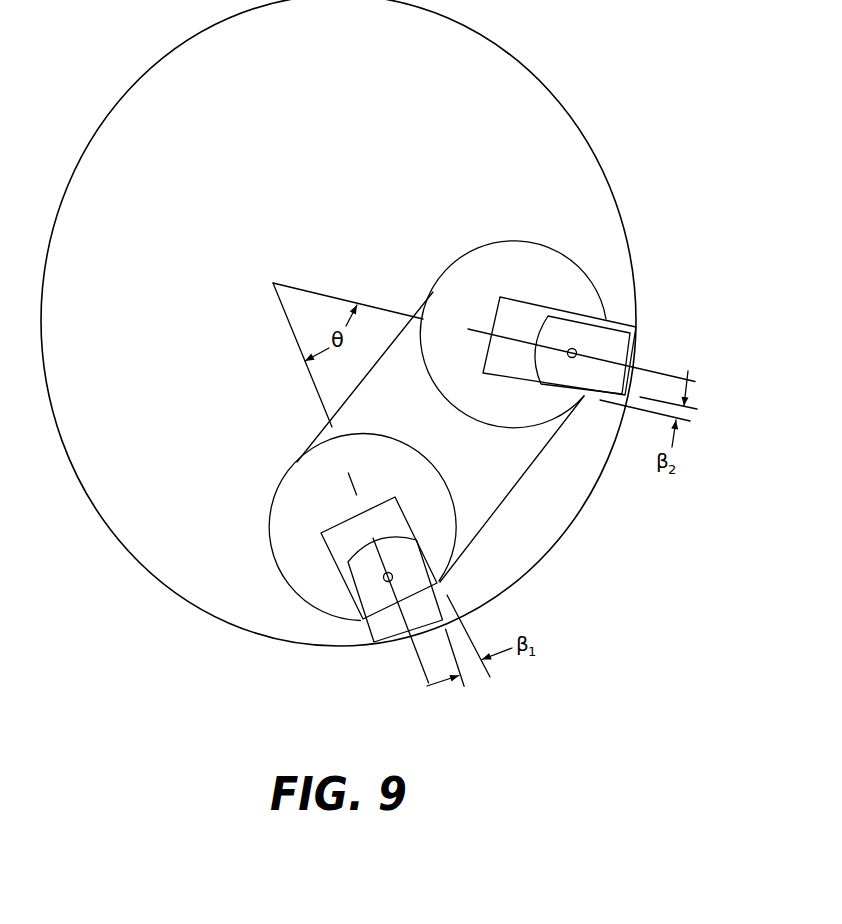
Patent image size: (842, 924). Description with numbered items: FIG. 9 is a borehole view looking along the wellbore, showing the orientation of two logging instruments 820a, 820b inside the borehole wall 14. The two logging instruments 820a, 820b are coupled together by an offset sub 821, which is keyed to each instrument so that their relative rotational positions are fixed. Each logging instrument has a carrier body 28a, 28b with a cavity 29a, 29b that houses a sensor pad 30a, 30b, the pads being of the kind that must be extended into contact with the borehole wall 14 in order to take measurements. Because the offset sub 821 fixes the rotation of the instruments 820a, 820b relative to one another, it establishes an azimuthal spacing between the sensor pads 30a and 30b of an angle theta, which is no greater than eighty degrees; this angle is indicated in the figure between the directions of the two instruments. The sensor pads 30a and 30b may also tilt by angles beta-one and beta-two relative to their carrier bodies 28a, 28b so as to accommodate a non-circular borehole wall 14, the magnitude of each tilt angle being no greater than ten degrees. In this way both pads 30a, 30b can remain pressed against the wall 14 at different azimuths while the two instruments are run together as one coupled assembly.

The borehole wall 14 is at (568, 108).
The offset sub 821 is at (505, 502).
The logging instrument 820a is at (531, 316).
The logging instrument 820b is at (301, 573).
The carrier body 28a is at (592, 277).
The carrier body 28b is at (310, 603).
The cavity 29a is at (527, 302).
The cavity 29b is at (321, 534).
The sensor pad 30a is at (625, 326).
The sensor pad 30b is at (372, 641).